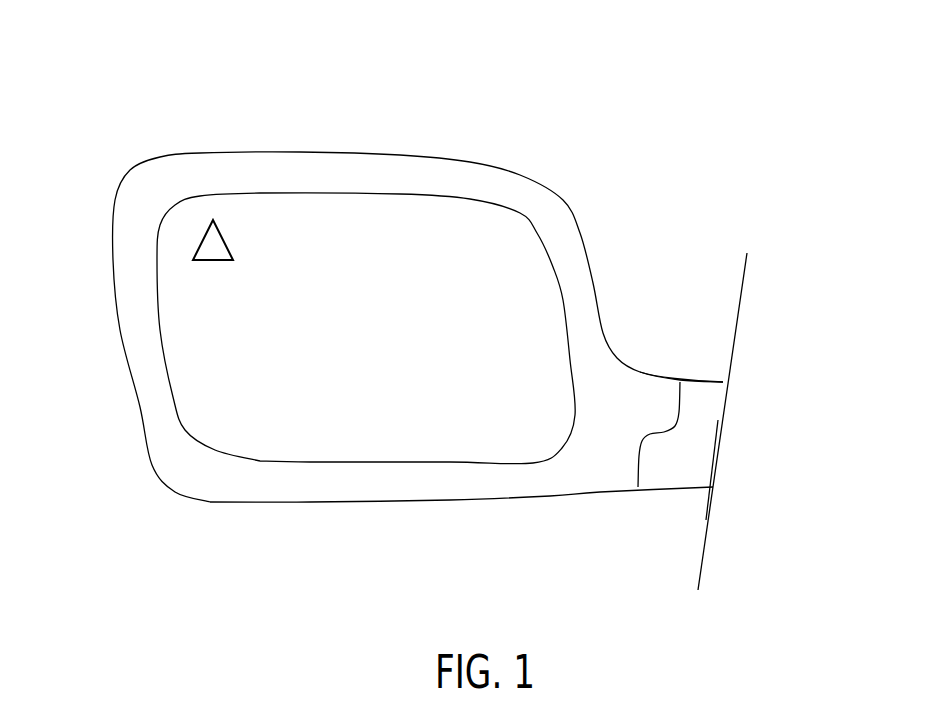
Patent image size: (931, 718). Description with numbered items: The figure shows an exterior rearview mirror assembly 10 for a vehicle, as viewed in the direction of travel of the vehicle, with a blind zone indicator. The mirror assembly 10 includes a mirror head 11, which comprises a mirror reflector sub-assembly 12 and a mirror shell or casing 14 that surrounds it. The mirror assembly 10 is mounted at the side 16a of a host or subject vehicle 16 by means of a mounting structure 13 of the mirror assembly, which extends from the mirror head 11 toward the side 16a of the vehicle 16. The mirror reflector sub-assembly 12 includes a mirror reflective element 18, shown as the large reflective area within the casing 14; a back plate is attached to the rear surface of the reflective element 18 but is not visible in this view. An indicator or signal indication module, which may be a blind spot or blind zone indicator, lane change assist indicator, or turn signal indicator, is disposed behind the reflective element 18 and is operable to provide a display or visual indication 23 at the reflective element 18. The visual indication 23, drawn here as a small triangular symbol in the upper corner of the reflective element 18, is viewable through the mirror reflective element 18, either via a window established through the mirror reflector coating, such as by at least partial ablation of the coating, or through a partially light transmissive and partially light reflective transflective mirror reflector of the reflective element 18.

The exterior rearview mirror assembly 10 is at (357, 80).
The mirror head 11 is at (600, 212).
The mirror reflector sub-assembly 12 is at (389, 443).
The mounting structure 13 is at (693, 380).
The mirror shell or casing 14 is at (263, 495).
The host vehicle 16 is at (738, 482).
The side of the vehicle 16a is at (702, 555).
The mirror reflective element 18 is at (227, 367).
The visual indication 23 is at (207, 222).